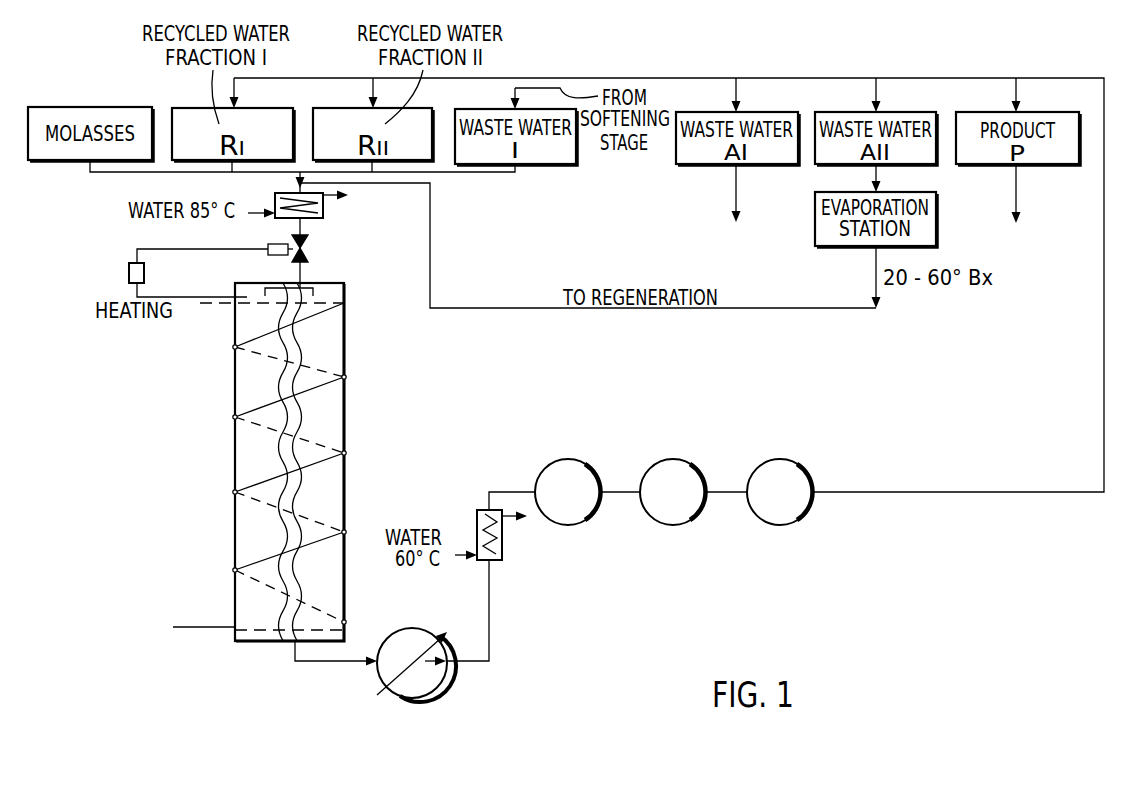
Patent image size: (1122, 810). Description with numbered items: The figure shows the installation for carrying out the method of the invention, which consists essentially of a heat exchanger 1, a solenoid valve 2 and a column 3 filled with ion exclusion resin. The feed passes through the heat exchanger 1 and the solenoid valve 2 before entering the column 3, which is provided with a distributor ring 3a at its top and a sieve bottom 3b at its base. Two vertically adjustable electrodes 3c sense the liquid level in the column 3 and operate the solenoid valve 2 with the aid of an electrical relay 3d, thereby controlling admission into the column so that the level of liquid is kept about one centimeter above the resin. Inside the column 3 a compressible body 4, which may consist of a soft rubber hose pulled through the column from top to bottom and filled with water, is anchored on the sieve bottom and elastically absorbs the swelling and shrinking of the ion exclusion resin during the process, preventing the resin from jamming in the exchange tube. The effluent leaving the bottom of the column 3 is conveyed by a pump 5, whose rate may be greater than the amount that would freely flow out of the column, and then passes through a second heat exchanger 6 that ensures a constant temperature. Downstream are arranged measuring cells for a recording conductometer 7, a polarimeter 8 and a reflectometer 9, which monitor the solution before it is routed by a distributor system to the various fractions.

The heat exchanger 1 is at (323, 204).
The solenoid valve 2 is at (307, 246).
The column 3 is at (322, 490).
The distributor ring 3a is at (318, 289).
The sieve bottom 3b is at (344, 631).
The vertically adjustable electrodes 3c is at (236, 298).
The electrical relay 3d is at (129, 276).
The compressible body 4 is at (278, 413).
The pump 5 is at (413, 680).
The heat exchanger 6 is at (502, 550).
The recording conductometer 7 is at (572, 520).
The polarimeter 8 is at (677, 520).
The reflectometer 9 is at (784, 520).